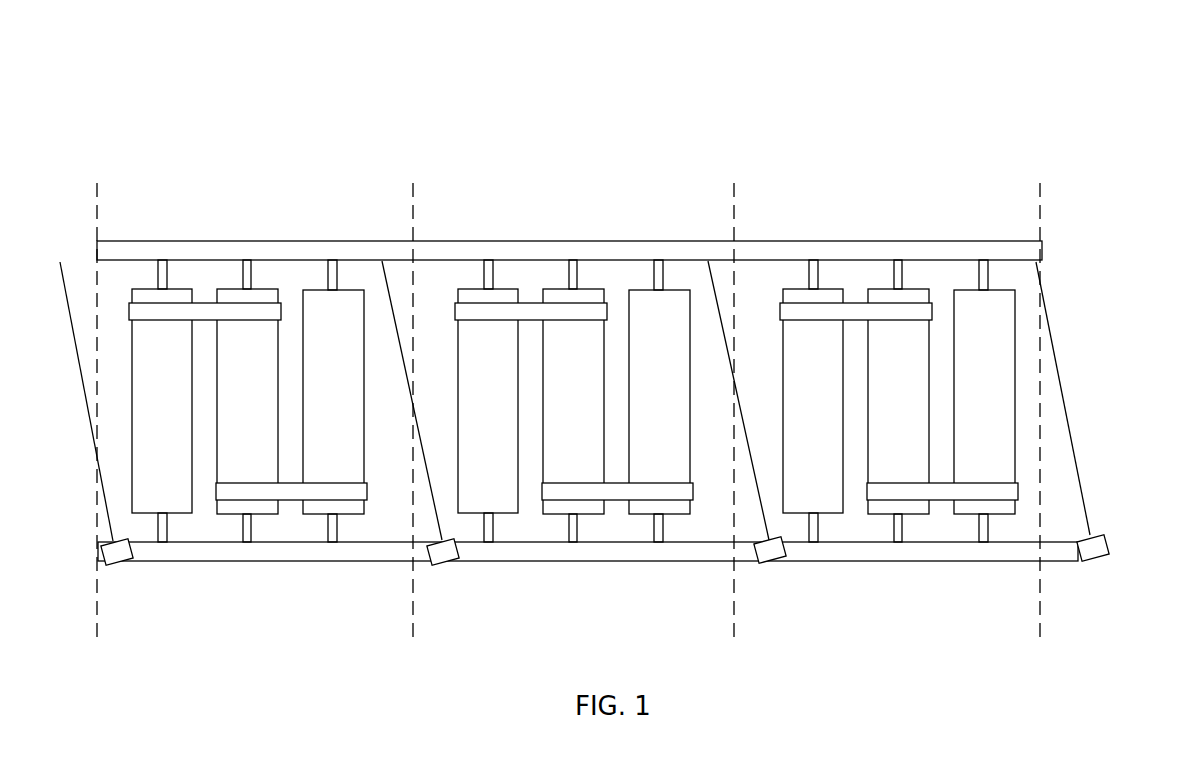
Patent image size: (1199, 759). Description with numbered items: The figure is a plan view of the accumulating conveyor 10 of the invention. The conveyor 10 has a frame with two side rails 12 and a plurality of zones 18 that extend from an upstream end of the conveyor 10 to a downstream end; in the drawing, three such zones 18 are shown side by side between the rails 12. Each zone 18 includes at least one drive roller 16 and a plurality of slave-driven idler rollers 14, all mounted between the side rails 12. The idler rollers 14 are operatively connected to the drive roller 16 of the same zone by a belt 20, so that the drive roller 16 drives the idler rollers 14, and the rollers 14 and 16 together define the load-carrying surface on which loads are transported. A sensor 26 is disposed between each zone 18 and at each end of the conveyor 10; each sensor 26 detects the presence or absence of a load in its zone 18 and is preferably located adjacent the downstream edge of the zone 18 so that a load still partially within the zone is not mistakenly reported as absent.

The accumulating conveyor 10 is at (170, 124).
The side rail 12 is at (312, 252).
The idler roller 14 is at (180, 421).
The drive roller 16 is at (263, 421).
The zone 18 is at (277, 186).
The belt 20 is at (205, 312).
The sensor 26 is at (117, 561).